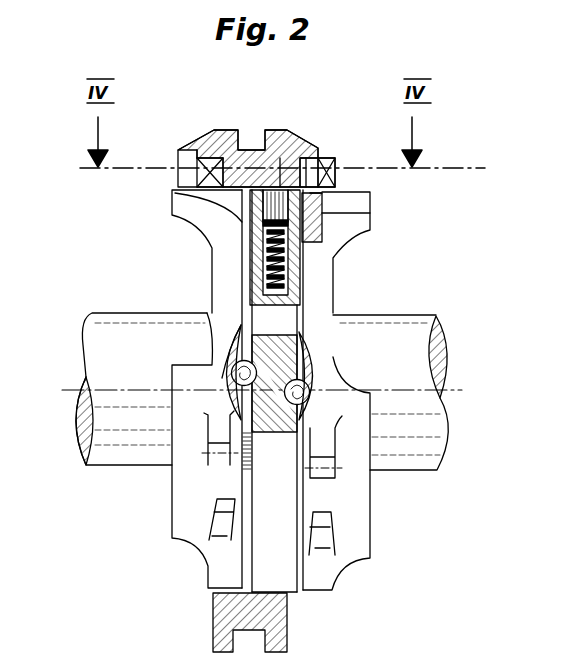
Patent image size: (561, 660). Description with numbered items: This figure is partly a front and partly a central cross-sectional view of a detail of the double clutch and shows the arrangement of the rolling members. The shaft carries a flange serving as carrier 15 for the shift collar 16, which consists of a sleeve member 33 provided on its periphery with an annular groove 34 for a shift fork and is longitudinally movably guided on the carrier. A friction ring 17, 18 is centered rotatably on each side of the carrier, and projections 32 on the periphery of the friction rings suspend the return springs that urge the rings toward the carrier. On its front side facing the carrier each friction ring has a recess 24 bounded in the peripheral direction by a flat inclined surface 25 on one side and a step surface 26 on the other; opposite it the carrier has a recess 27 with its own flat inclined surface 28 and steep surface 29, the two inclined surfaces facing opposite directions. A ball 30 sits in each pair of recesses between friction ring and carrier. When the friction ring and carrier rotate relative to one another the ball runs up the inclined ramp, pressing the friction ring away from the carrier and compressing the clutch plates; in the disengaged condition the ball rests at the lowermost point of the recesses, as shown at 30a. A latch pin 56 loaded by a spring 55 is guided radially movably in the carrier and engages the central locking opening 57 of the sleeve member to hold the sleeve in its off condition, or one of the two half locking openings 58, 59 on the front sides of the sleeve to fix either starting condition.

The carrier 15 is at (277, 572).
The shift collar 16 is at (222, 127).
The friction ring 17 is at (350, 542).
The friction ring 18 is at (193, 503).
The recess 24 is at (219, 355).
The flat inclined surface 25 is at (222, 378).
The step surface 26 is at (222, 348).
The recess 27 is at (306, 402).
The flat inclined surface 28 is at (312, 360).
The steep surface 29 is at (267, 433).
The ball 30 is at (262, 367).
The ball in disengaged position 30a is at (305, 392).
The projection 32 is at (326, 473).
The sleeve member 33 is at (284, 172).
The annular groove 34 is at (247, 143).
The spring 55 is at (330, 262).
The latch pin 56 is at (322, 207).
The locking opening 57 is at (206, 207).
The half locking opening 58 is at (194, 172).
The half locking opening 59 is at (306, 162).